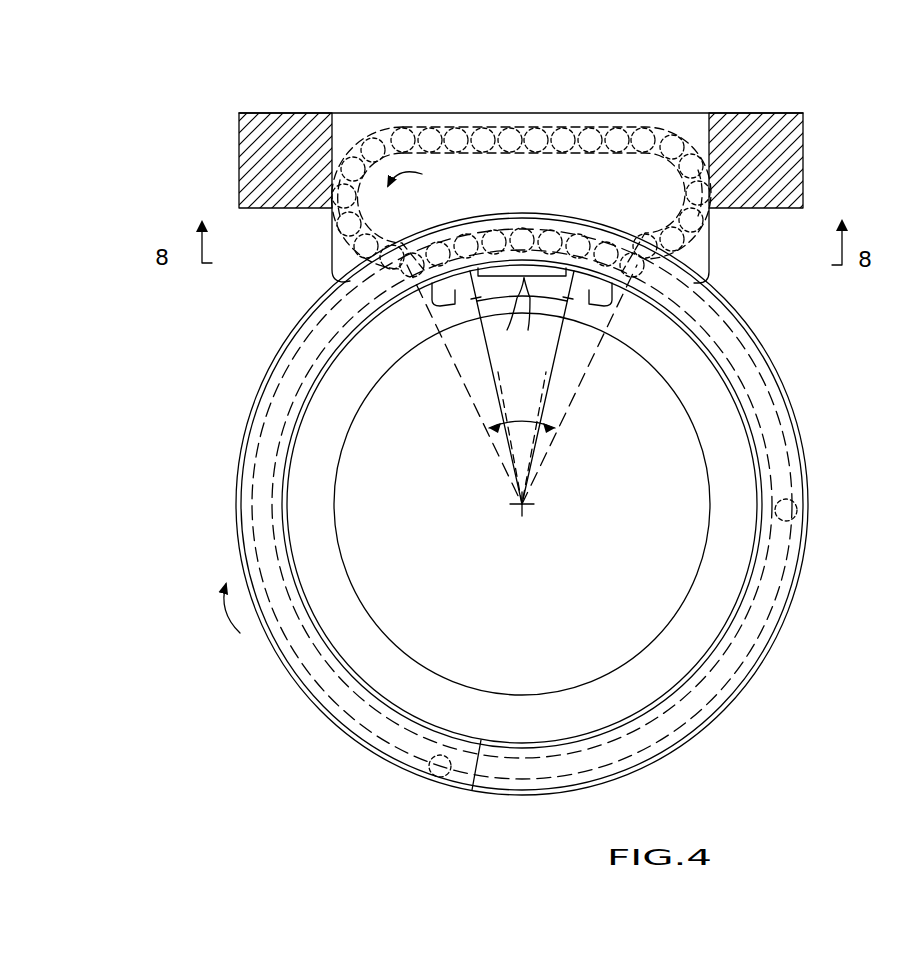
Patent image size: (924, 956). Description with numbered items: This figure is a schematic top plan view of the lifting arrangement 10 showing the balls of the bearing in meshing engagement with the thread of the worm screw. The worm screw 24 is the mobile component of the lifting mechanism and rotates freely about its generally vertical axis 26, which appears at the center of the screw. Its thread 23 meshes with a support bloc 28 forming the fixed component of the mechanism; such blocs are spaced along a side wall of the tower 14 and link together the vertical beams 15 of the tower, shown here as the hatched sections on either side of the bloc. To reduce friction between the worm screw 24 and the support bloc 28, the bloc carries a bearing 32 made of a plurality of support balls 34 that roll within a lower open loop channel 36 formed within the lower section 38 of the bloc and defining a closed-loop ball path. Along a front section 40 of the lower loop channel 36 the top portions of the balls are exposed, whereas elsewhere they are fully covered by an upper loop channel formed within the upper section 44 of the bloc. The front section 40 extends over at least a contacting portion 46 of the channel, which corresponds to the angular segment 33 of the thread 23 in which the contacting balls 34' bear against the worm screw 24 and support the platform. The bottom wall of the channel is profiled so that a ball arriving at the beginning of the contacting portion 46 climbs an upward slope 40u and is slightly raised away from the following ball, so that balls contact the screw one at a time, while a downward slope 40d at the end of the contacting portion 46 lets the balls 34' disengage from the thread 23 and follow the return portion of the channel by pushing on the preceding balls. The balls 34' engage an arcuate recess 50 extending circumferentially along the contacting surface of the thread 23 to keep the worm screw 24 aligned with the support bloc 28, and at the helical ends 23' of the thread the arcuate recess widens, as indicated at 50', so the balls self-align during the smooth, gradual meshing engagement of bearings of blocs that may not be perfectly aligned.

The bearing assembly 10 is at (160, 91).
The tower 14 is at (275, 105).
The vertical beams 15 is at (239, 160).
The thread 23 is at (554, 504).
The helical ends of the thread 23' is at (505, 797).
The worm screw 24 is at (710, 617).
The vertical axis 26 is at (527, 507).
The support bloc 28 is at (630, 113).
The bearing 32 is at (661, 117).
The angular segment 33 is at (522, 424).
The support balls 34 is at (521, 159).
The contacting balls 34' is at (522, 221).
The lower open loop channel 36 is at (700, 116).
The lower section 38 is at (345, 280).
The front section 40 is at (524, 278).
The upward slope 40u is at (443, 320).
The downward slope 40d is at (600, 320).
The upper section 44 is at (700, 248).
The contacting portion 46 is at (507, 330).
The arcuate recess 50 is at (573, 504).
The arcuate widened recess 50' is at (397, 782).